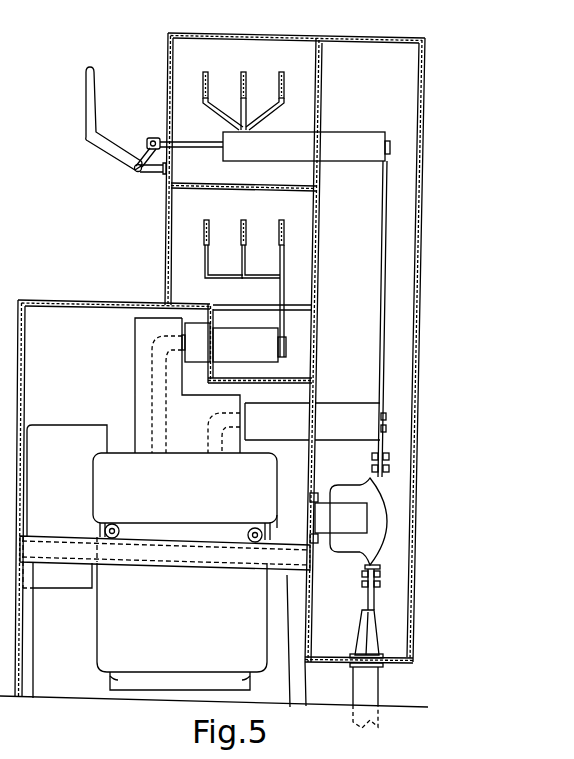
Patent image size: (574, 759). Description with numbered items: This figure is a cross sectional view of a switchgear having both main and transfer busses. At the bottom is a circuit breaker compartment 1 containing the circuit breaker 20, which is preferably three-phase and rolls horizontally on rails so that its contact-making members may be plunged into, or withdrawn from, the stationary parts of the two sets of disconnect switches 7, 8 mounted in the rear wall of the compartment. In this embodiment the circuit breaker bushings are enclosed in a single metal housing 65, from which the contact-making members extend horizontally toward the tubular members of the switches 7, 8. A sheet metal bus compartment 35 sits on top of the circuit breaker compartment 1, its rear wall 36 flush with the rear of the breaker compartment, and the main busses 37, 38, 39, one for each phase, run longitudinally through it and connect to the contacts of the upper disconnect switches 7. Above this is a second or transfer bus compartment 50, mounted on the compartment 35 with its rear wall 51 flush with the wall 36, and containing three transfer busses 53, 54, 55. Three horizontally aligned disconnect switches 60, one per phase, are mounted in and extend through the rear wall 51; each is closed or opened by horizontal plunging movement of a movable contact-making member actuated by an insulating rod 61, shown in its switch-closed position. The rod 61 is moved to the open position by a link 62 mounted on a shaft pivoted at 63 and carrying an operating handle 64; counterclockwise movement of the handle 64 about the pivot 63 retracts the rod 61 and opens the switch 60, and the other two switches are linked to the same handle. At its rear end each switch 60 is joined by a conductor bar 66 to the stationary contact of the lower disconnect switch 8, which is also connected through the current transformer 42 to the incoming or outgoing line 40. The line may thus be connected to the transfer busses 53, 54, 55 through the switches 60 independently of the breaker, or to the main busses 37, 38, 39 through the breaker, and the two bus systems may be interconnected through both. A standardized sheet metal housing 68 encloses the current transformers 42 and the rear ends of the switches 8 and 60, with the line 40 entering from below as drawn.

The circuit breaker compartment 1 is at (72, 675).
The disconnect switches 7 is at (228, 335).
The disconnect switches 8 is at (350, 413).
The circuit breaker 20 is at (136, 663).
The bus compartment 35 is at (183, 250).
The rear wall 36 is at (317, 285).
The bus 37 is at (197, 204).
The bus 38 is at (243, 222).
The bus 39 is at (273, 210).
The line or circuit 40 is at (376, 690).
The current transformer 42 is at (378, 513).
The transfer bus compartment 50 is at (186, 79).
The rear wall 51 is at (323, 113).
The transfer bus 53 is at (218, 56).
The transfer bus 54 is at (259, 52).
The transfer bus 55 is at (297, 58).
The disconnect switch 60 is at (283, 153).
The insulating rod 61 is at (207, 148).
The link 62 is at (118, 156).
The pivot 63 is at (140, 177).
The operating handle 64 is at (86, 108).
The metal housing 65 is at (143, 333).
The conductor bar 66 is at (385, 280).
The sheet metal housing 68 is at (408, 115).